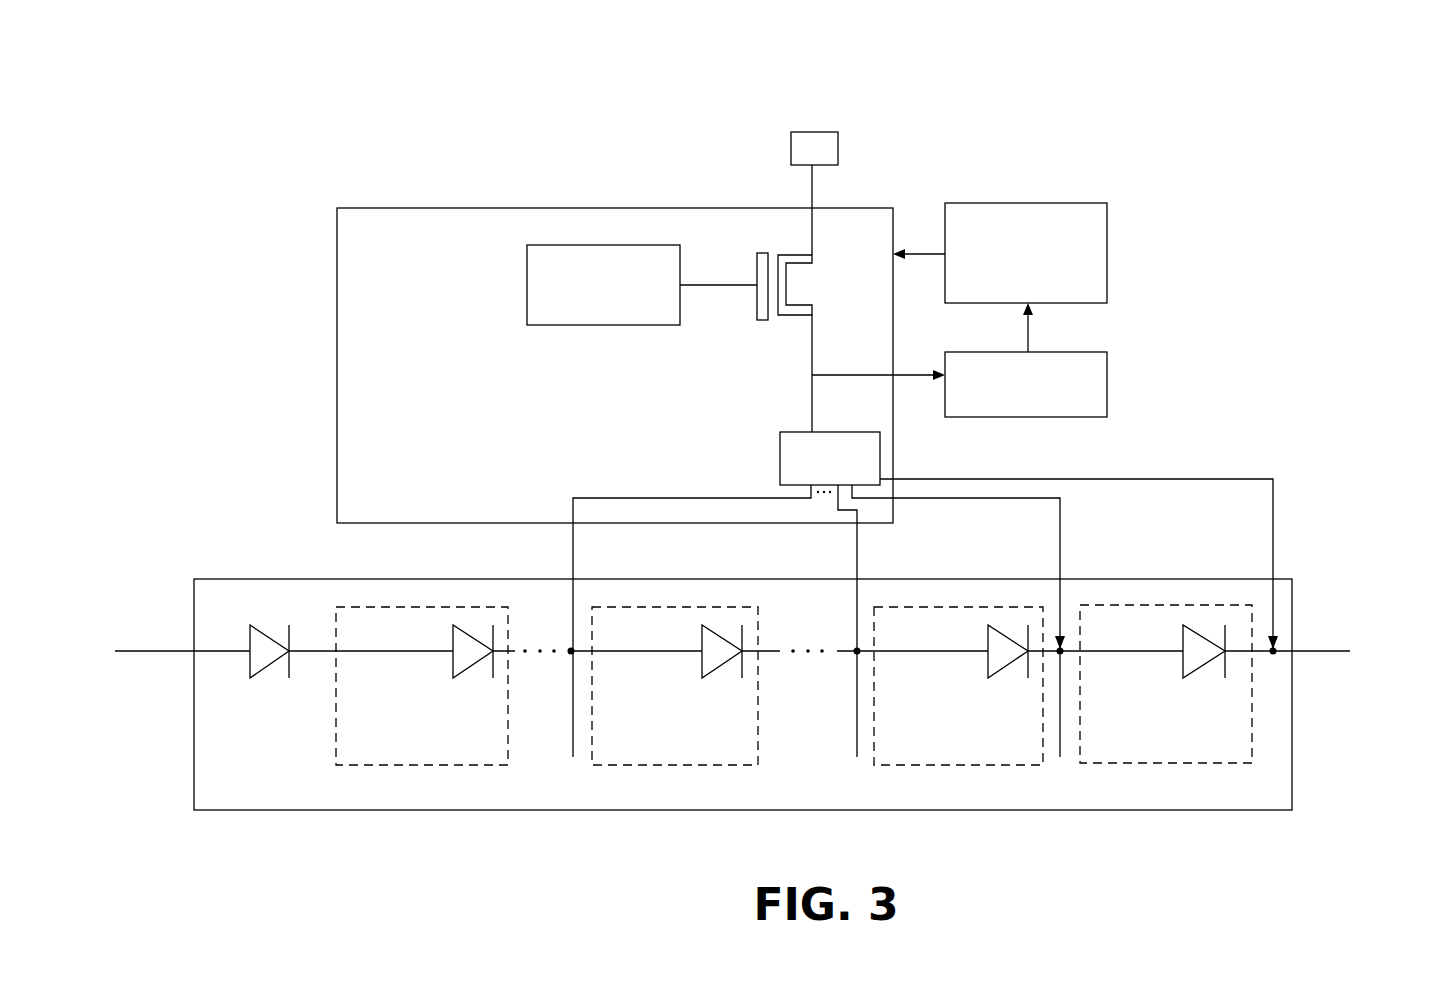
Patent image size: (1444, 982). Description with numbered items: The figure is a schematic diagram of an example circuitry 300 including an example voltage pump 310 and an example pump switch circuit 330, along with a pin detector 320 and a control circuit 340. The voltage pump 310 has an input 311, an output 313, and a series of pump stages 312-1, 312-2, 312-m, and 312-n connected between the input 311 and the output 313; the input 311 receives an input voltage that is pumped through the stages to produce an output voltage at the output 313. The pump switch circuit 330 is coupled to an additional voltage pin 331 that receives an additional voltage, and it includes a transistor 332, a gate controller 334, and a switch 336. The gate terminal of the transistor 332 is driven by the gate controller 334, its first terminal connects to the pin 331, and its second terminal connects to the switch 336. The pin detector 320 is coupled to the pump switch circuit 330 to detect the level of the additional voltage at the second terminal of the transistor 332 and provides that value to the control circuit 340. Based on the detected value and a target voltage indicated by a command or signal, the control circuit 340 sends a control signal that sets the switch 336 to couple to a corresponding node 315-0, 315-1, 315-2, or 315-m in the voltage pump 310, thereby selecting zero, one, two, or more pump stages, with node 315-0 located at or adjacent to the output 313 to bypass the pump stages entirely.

The circuitry 300 is at (147, 56).
The voltage pump 310 is at (287, 500).
The input 311 is at (174, 666).
The pump stage 312-n is at (436, 600).
The pump stage 312-m is at (688, 600).
The pump stage 312-2 is at (995, 600).
The pump stage 312-1 is at (1170, 597).
The output 313 is at (1325, 669).
The node 315-m is at (571, 757).
The node 315-2 is at (857, 757).
The node 315-1 is at (1060, 757).
The node 315-0 is at (1283, 643).
The pin detector 320 is at (1107, 380).
The pump switch circuit 330 is at (560, 200).
The additional voltage pin 331 is at (838, 150).
The transistor 332 is at (757, 258).
The gate controller 334 is at (527, 278).
The switch 336 is at (775, 430).
The control circuit 340 is at (1055, 203).